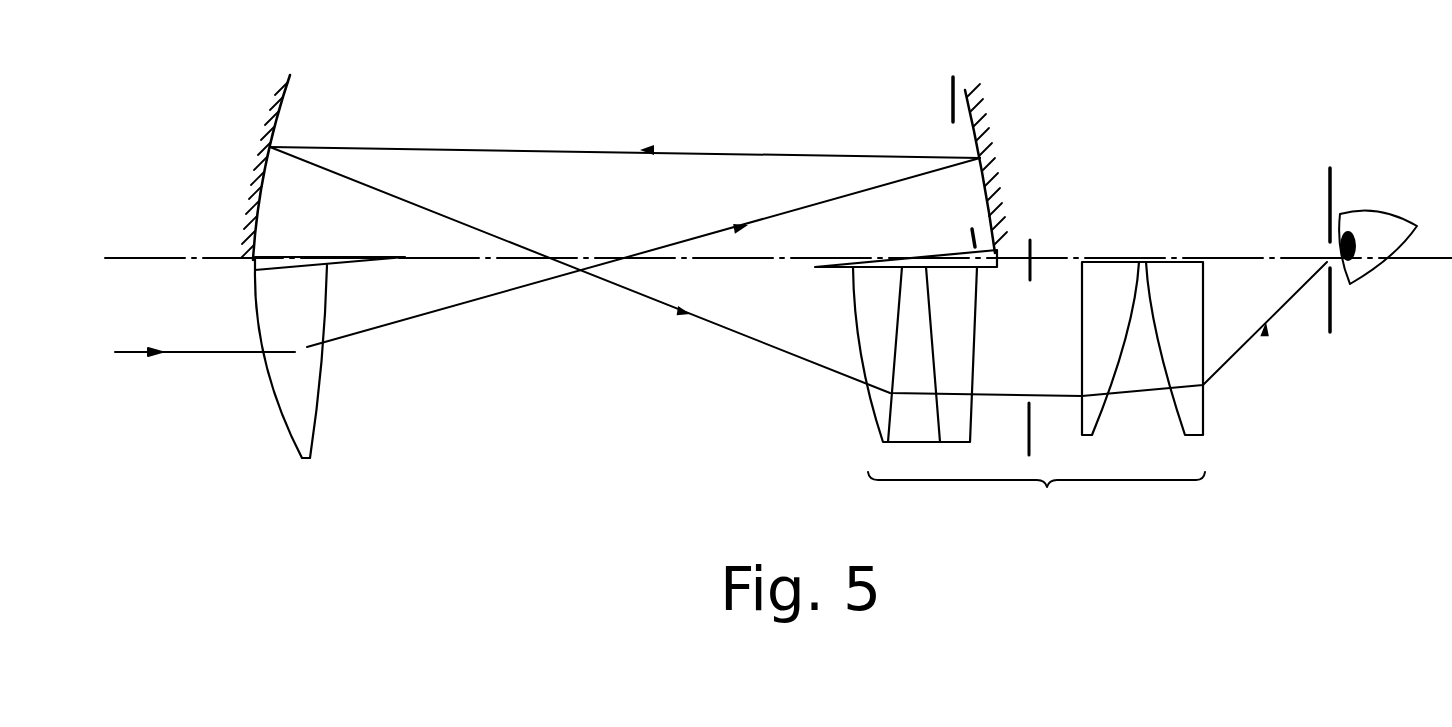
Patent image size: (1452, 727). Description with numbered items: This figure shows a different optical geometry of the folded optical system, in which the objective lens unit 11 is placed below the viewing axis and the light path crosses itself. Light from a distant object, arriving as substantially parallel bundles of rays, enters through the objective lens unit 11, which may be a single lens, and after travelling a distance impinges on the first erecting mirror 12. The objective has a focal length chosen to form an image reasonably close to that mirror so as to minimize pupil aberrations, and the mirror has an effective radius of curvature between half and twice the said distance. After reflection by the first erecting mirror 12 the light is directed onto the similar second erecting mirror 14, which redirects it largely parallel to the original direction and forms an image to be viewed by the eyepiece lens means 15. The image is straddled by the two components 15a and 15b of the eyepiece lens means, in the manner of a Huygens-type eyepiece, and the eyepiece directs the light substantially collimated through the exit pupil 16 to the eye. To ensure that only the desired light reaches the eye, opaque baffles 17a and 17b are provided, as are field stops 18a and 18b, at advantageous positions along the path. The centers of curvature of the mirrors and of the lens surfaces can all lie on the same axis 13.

The objective lens unit 11 is at (302, 388).
The first erecting mirror 12 is at (985, 137).
The axis 13 is at (122, 257).
The second erecting mirror 14 is at (262, 147).
The eyepiece lens means 15 is at (1036, 499).
The component of the eyepiece lens means 15a is at (968, 328).
The component of the eyepiece lens means 15b is at (1195, 322).
The exit pupil 16 is at (1328, 226).
The baffle 17a is at (297, 262).
The baffle 17b is at (940, 258).
The field stop 18a is at (946, 97).
The field stop 18b is at (1026, 276).